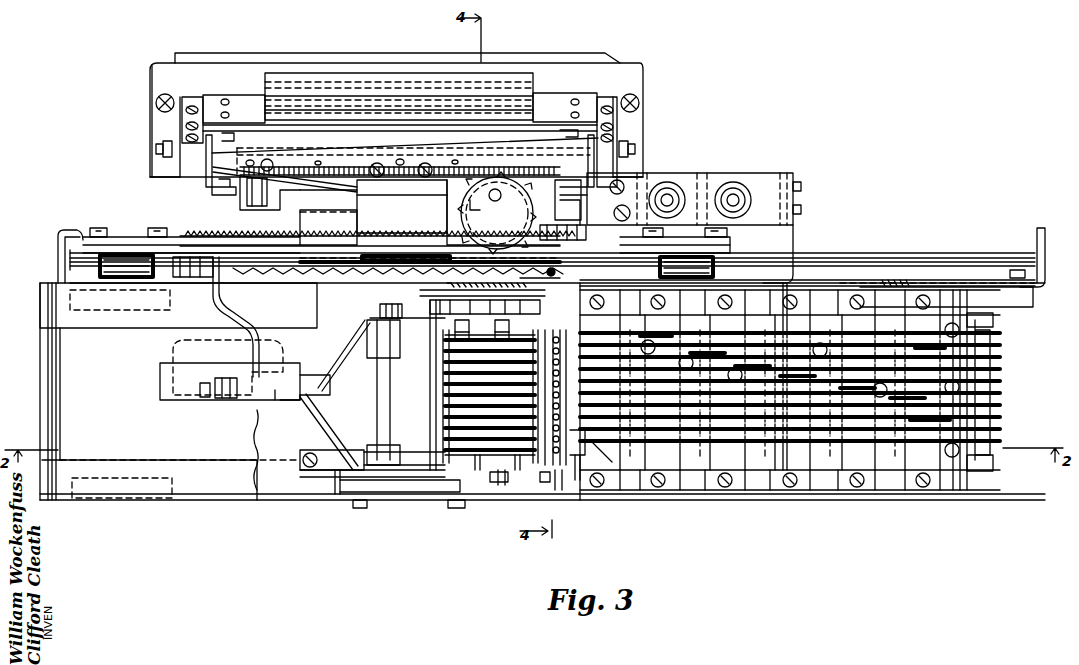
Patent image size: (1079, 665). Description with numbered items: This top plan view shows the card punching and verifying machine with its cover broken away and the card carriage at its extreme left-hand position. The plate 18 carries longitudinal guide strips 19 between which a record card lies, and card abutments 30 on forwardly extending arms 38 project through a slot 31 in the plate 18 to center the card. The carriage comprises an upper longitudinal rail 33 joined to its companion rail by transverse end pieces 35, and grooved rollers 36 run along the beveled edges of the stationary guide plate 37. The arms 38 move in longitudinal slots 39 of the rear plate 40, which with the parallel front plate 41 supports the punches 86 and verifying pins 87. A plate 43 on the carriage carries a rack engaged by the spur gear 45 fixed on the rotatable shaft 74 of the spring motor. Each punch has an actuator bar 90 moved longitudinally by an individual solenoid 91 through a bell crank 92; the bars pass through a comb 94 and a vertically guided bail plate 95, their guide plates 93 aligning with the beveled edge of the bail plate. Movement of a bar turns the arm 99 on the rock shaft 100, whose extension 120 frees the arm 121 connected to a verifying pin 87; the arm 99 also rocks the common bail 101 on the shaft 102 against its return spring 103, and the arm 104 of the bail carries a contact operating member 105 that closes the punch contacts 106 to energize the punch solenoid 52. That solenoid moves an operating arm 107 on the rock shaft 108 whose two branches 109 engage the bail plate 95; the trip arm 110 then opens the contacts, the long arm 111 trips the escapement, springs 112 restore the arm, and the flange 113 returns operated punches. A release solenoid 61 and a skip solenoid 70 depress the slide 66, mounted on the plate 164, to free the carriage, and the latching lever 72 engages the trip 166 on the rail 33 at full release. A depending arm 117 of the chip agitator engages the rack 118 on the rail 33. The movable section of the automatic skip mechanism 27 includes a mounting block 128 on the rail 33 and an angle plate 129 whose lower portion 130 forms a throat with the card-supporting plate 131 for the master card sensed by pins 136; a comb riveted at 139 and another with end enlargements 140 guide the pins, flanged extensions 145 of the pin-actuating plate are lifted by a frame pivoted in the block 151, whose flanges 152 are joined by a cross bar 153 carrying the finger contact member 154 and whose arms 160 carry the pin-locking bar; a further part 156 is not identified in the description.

The plate 18 is at (62, 392).
The longitudinal guide strips 19 is at (83, 334).
The automatic skip mechanism 27 is at (347, 191).
The abutments 30 is at (232, 372).
The slot 31 is at (200, 391).
The upper longitudinal rail 33 is at (728, 249).
The transverse end pieces 35 is at (80, 236).
The grooved rollers 36 is at (152, 270).
The stationary guide plate 37 is at (860, 244).
The forwardly extending arms 38 is at (604, 329).
The longitudinal slots 39 is at (869, 266).
The rear plate 40 is at (930, 285).
The front plate 41 is at (690, 500).
The plate 43 is at (284, 237).
The spur gear 45 is at (455, 218).
The punch solenoid 52 is at (264, 458).
The release solenoid 61 is at (710, 190).
The slide 66 is at (586, 233).
The skip solenoid 70 is at (692, 185).
The latching lever 72 is at (632, 213).
The rotatable shaft 74 is at (490, 195).
The punches 86 is at (583, 470).
The verifying pins 87 is at (556, 338).
The actuator bar 90 is at (445, 420).
The individual solenoid 91 is at (750, 452).
The bell crank 92 is at (805, 355).
The guide plates 93 is at (575, 448).
The comb 94 is at (600, 462).
The bail plate 95 is at (560, 487).
The arm 99 is at (482, 472).
The rock shaft 100 is at (527, 306).
The common bail 101 is at (445, 385).
The shaft 102 is at (445, 363).
The return spring 103 is at (472, 304).
The arm 104 is at (445, 440).
The contact operating member 105 is at (360, 452).
The punch contacts 106 is at (365, 482).
The operating arm 107 is at (286, 385).
The rock shaft 108 is at (380, 379).
The branches 109 is at (350, 336).
The trip arm 110 is at (335, 482).
The long arm 111 is at (378, 311).
The springs 112 is at (500, 485).
The flange 113 is at (545, 482).
The depending arm 117 is at (548, 273).
The rack 118 is at (446, 276).
The extension 120 is at (445, 352).
The arm 121 is at (445, 398).
The mounting block 128 is at (372, 221).
The angle plate 129 is at (405, 181).
The lower portion 130 is at (190, 76).
The card-supporting plate 131 is at (341, 55).
The sensing pins 136 is at (338, 182).
The rivets 139 is at (316, 155).
The enlargements 140 is at (288, 190).
The lateral flanged extensions 145 is at (200, 190).
The block 151 is at (185, 118).
The flanges 152 is at (234, 135).
The cross bar 153 is at (243, 100).
The finger contact member 154 is at (392, 88).
The stop 156 is at (226, 192).
The arms 160 is at (205, 172).
The plate 164 is at (512, 221).
The trip 166 is at (485, 205).